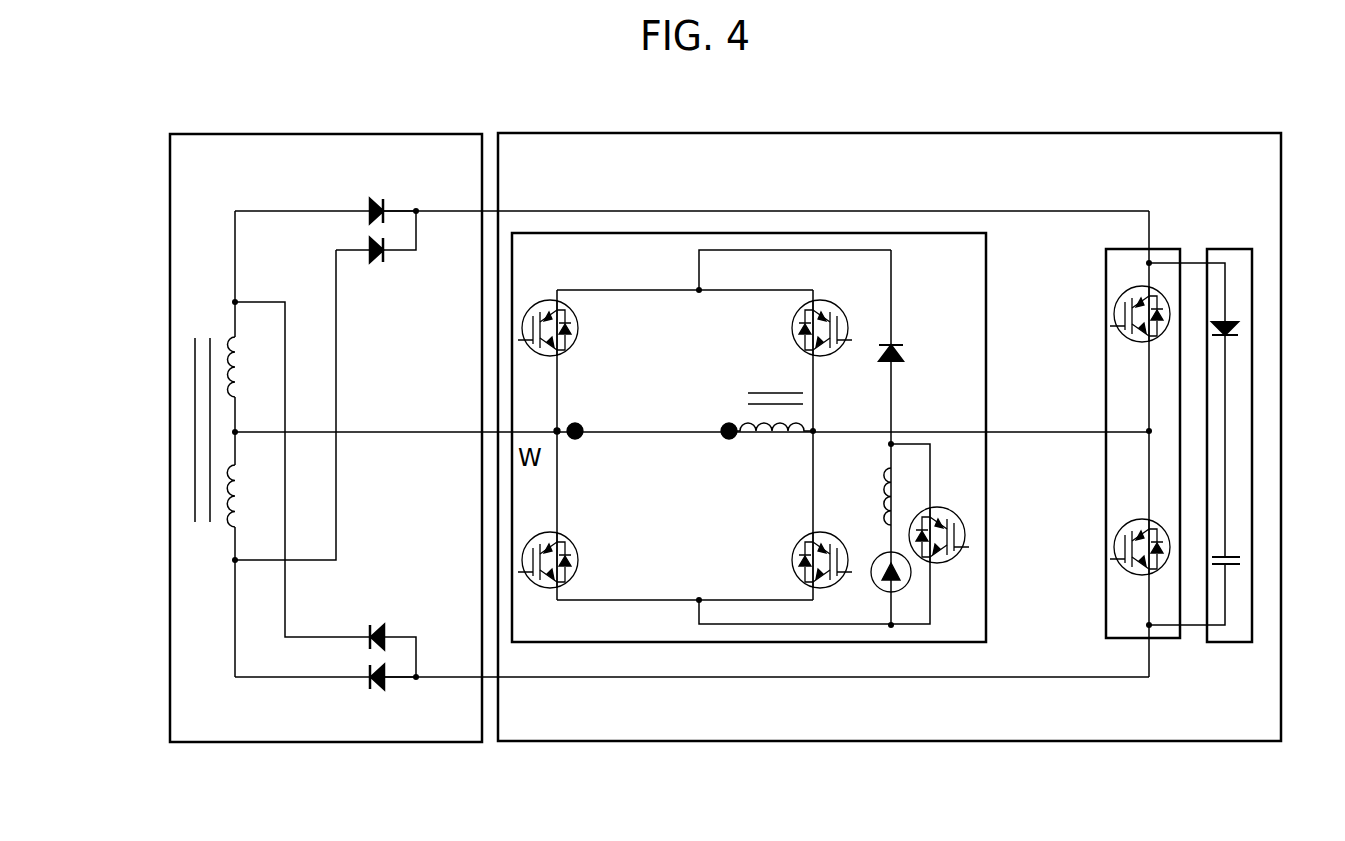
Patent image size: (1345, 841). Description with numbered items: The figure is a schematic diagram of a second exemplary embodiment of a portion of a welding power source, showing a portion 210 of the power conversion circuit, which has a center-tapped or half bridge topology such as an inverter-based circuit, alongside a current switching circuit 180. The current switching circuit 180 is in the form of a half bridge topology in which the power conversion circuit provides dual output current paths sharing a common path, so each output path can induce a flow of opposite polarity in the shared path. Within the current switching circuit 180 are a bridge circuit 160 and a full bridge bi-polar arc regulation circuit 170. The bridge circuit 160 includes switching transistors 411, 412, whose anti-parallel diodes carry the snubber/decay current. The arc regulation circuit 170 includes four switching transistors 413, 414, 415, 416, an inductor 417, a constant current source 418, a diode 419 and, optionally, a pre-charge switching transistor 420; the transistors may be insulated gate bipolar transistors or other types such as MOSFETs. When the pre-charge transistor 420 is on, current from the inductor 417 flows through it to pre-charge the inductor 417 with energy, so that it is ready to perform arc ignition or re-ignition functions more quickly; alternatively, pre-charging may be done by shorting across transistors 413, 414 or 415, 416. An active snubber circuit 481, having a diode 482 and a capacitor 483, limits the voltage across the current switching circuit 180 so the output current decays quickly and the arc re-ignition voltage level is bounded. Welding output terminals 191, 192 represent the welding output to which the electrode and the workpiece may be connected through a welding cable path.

The portion of the power conversion circuit 210 is at (200, 134).
The current switching circuit 180 is at (952, 133).
The arc regulation circuit 170 is at (672, 233).
The bridge circuit 160 is at (1118, 249).
The switching transistor 411 is at (1127, 302).
The switching transistor 412 is at (1128, 525).
The switching transistor 413 is at (568, 314).
The switching transistor 414 is at (568, 540).
The switching transistor 415 is at (806, 313).
The switching transistor 416 is at (810, 540).
The inductor 417 is at (880, 499).
The constant current source 418 is at (876, 582).
The diode 419 is at (895, 345).
The pre-charge switching transistor 420 is at (945, 508).
The active snubber circuit 481 is at (1225, 249).
The diode 482 is at (1232, 330).
The capacitor 483 is at (1232, 556).
The welding output terminal 191 is at (720, 431).
The welding output terminal 192 is at (577, 422).